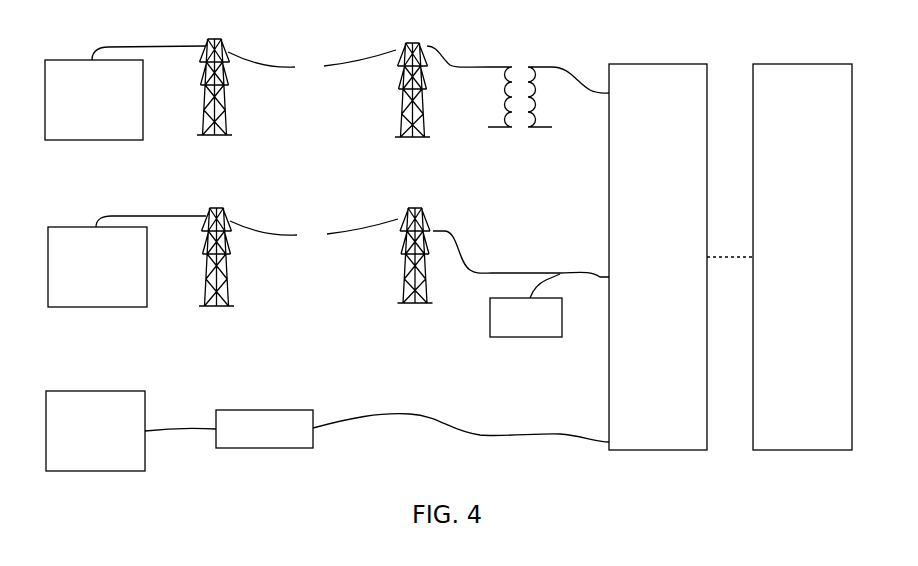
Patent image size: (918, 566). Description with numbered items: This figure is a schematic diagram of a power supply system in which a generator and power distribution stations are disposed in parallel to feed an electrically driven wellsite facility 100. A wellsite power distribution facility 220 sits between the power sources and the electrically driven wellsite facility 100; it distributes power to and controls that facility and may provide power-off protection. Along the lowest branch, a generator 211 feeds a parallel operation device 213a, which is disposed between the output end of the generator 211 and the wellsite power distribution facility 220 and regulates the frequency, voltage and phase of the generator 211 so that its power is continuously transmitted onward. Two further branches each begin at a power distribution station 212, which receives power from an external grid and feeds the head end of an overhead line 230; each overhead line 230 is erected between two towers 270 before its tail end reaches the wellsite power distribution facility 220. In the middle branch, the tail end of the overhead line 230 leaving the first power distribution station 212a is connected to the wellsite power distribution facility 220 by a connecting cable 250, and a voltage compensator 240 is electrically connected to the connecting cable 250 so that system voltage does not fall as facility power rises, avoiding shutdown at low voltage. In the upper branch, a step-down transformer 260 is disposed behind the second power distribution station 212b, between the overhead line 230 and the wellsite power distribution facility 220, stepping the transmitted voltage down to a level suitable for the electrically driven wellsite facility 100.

The electrically driven wellsite facility 100 is at (779, 257).
The generator 211 is at (131, 431).
The power distribution station 212 is at (125, 190).
The power distribution station 212a is at (127, 261).
The power distribution station 212b is at (125, 93).
The parallel operation device 213a is at (412, 429).
The wellsite power distribution facility 220 is at (658, 257).
The overhead line 230 is at (313, 146).
The voltage compensator 240 is at (526, 305).
The connecting cable 250 is at (521, 254).
The step-down transformer 260 is at (518, 98).
The tower 270 is at (315, 175).